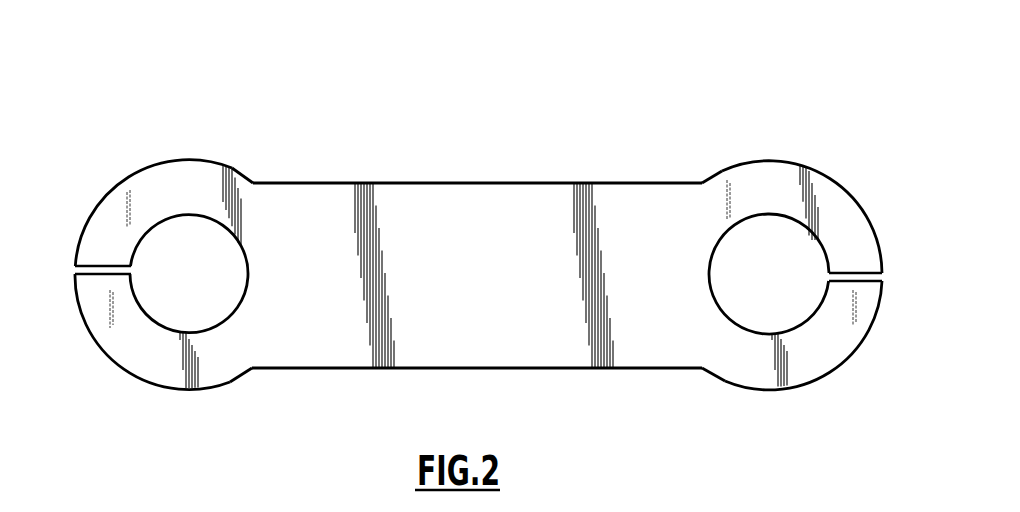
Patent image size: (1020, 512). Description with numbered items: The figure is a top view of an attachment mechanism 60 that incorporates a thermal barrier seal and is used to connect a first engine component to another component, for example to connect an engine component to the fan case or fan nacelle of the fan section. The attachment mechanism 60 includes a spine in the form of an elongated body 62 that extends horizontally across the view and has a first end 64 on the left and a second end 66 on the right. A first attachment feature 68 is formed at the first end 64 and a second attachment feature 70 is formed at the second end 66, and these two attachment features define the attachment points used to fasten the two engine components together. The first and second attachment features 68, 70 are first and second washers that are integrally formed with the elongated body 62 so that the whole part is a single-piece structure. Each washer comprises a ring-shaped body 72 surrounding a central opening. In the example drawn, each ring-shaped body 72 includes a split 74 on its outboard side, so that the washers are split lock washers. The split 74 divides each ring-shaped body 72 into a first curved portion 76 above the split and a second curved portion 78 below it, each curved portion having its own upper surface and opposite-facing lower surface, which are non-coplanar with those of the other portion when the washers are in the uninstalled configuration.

The attachment mechanism 60 is at (750, 96).
The elongated body 62 is at (477, 333).
The first end 64 is at (258, 188).
The second end 66 is at (698, 183).
The first attachment feature 68 is at (236, 380).
The second attachment feature 70 is at (745, 388).
The ring-shaped body 72 is at (843, 222).
The split 74 is at (883, 277).
The first curved portion 76 is at (110, 213).
The second curved portion 78 is at (100, 333).